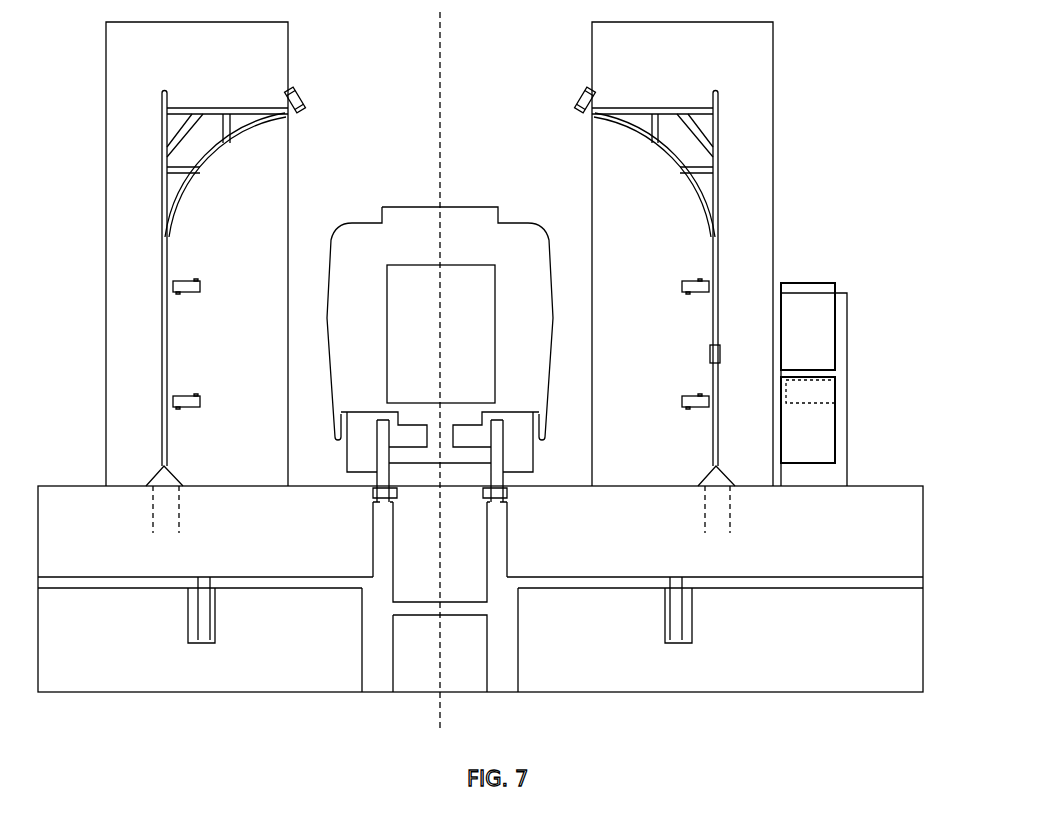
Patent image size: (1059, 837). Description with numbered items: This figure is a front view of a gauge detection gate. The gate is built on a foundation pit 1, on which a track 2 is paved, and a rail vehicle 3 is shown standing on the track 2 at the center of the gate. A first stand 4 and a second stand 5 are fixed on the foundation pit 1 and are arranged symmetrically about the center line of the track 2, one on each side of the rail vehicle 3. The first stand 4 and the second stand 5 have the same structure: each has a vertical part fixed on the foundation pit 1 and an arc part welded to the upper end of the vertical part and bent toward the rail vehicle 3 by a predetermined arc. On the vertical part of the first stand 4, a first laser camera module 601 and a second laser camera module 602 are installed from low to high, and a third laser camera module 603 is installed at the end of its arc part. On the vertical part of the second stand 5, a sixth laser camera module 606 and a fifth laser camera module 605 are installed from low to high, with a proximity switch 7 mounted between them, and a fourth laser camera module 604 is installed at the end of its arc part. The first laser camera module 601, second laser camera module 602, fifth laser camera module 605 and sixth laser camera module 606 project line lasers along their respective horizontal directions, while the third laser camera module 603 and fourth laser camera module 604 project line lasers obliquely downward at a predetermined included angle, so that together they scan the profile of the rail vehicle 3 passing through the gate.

The foundation pit 1 is at (909, 573).
The track 2 is at (369, 493).
The rail vehicle 3 is at (466, 222).
The first stand 4 is at (194, 197).
The second stand 5 is at (687, 197).
The proximity switch 7 is at (708, 356).
The first laser camera module 601 is at (203, 396).
The second laser camera module 602 is at (203, 295).
The third laser camera module 603 is at (307, 92).
The fourth laser camera module 604 is at (579, 115).
The fifth laser camera module 605 is at (688, 300).
The sixth laser camera module 606 is at (687, 412).